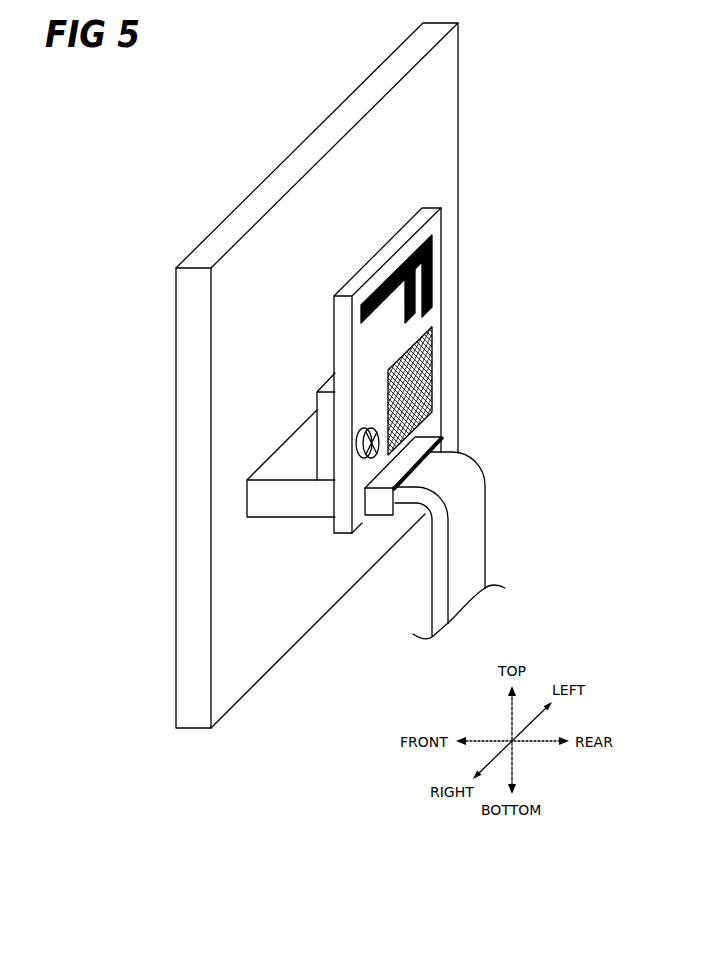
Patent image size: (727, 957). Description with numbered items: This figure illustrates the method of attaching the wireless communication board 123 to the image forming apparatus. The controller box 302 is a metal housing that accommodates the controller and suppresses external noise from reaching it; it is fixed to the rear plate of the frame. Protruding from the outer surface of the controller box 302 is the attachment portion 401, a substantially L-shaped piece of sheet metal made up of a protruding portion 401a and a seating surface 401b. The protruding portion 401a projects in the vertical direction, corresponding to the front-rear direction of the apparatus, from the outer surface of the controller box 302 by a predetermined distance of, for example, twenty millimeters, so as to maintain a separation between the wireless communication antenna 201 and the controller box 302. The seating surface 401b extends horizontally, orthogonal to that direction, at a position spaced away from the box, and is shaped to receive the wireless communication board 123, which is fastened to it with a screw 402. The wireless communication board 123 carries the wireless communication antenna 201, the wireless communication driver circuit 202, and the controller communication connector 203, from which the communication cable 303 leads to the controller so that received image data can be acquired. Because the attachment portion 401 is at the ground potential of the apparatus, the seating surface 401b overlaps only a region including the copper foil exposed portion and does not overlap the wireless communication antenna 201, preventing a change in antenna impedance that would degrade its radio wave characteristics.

The controller box 302 is at (458, 147).
The wireless communication antenna 201 is at (433, 267).
The wireless communication board 123 is at (441, 325).
The wireless communication driver circuit 202 is at (433, 382).
The controller communication connector 203 is at (420, 435).
The communication cable 303 is at (485, 528).
The attachment portion 401 is at (228, 516).
The protruding portion 401a is at (263, 498).
The seating surface 401b is at (323, 465).
The screw 402 is at (361, 443).